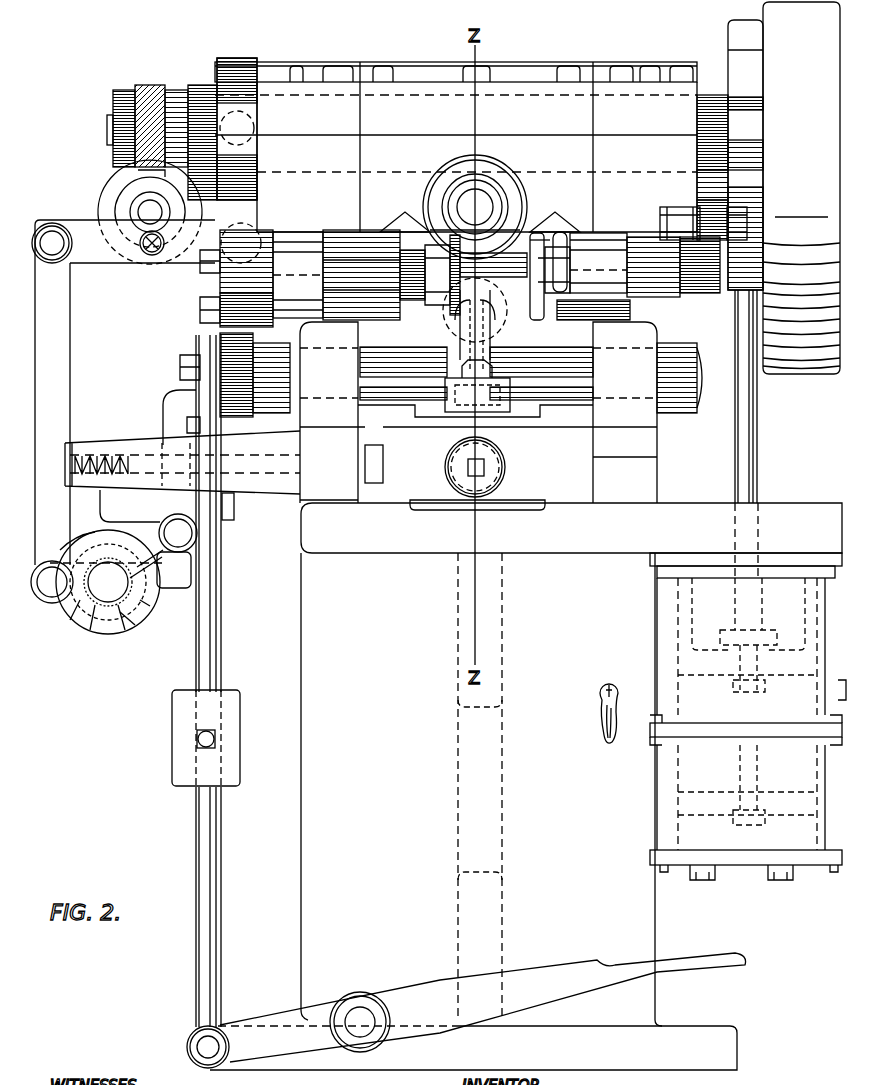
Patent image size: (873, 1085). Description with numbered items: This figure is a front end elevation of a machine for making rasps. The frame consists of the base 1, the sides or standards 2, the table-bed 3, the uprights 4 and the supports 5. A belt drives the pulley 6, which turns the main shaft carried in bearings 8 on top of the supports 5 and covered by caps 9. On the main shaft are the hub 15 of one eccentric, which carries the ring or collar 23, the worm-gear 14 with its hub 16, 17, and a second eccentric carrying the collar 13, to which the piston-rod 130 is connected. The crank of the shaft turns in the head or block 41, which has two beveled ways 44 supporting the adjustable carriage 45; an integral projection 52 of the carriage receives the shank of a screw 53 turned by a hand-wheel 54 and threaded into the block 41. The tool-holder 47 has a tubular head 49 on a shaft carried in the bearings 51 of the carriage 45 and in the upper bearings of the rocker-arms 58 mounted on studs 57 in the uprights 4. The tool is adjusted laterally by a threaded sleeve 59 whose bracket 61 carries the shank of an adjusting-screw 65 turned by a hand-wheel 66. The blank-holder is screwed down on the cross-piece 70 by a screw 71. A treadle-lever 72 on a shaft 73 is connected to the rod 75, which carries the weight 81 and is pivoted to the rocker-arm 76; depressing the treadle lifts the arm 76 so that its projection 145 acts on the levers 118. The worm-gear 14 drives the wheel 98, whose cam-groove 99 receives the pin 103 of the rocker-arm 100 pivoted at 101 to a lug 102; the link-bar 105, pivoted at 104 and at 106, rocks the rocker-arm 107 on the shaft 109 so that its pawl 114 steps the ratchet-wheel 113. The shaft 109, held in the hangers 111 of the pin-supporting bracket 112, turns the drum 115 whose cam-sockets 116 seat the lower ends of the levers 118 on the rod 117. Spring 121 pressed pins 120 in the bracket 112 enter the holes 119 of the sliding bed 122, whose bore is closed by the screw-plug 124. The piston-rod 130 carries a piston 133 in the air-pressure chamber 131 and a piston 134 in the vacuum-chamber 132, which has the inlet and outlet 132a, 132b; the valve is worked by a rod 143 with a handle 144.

The base 1 is at (712, 1052).
The sides or standards 2 is at (302, 906).
The table-bed 3 is at (571, 528).
The uprights 4 is at (370, 485).
The supports 5 is at (451, 250).
The pulley 6 is at (795, 374).
The bearings 8 is at (456, 147).
The caps 9 is at (298, 96).
The collar 13 is at (748, 40).
The worm-gear 14 is at (155, 88).
The hub of the eccentric 15 is at (203, 90).
The hub of the worm-gear 16 is at (180, 95).
The hub of the worm-gear 17 is at (124, 93).
The ring or collar 23 is at (236, 70).
The head or block 41 is at (502, 190).
The beveled ways 44 is at (472, 220).
The carriage 45 is at (541, 216).
The tool-holder 47 is at (492, 326).
The tubular head 49 is at (412, 314).
The bearings 51 is at (475, 288).
The projection 52 is at (440, 288).
The screw 53 is at (466, 206).
The hand-wheel 54 is at (504, 164).
The studs 57 is at (698, 372).
The rocker-arms 58 is at (300, 345).
The sleeve 59 is at (442, 330).
The bracket 61 is at (529, 284).
The adjusting-screw 65 is at (515, 318).
The hand-wheel 66 is at (580, 238).
The cross-piece 70 is at (477, 388).
The screw 71 is at (560, 350).
The treadle-lever 72 is at (483, 1007).
The shaft 73 is at (362, 1022).
The rod 75 is at (250, 970).
The rocker-arm 76 is at (216, 345).
The weight 81 is at (232, 752).
The wheel 98 is at (114, 186).
The cam-groove 99 is at (128, 208).
The rocker-arm 100 is at (110, 265).
The pivot 101 is at (241, 232).
The lug 102 is at (302, 236).
The pin 103 is at (152, 256).
The pivot 104 is at (52, 255).
The link-bar 105 is at (56, 393).
The pivot 106 is at (52, 604).
The rocker-arm 107 is at (105, 607).
The shaft 109 is at (131, 605).
The hangers 111 is at (142, 600).
The pin-supporting bracket 112 is at (268, 498).
The ratchet-wheel 113 is at (131, 621).
The pawl 114 is at (97, 556).
The drum or cylinder 115 is at (90, 625).
The cam-sockets 116 is at (88, 536).
The rod 117 is at (197, 543).
The levers 118 is at (200, 588).
The holes 119 is at (384, 462).
The pins 120 is at (247, 468).
The spiral spring 121 is at (98, 488).
The sliding bed 122 is at (509, 467).
The screw-plug 124 is at (485, 466).
The piston-rod 130 is at (760, 468).
The air-pressure chamber 131 is at (670, 628).
The vacuum-chamber 132 is at (668, 775).
The inlet 132a is at (703, 886).
The outlet 132b is at (794, 887).
The piston 133 is at (690, 660).
The piston 134 is at (700, 808).
The rod 143 is at (601, 702).
The handle 144 is at (603, 736).
The projection 145 is at (218, 418).